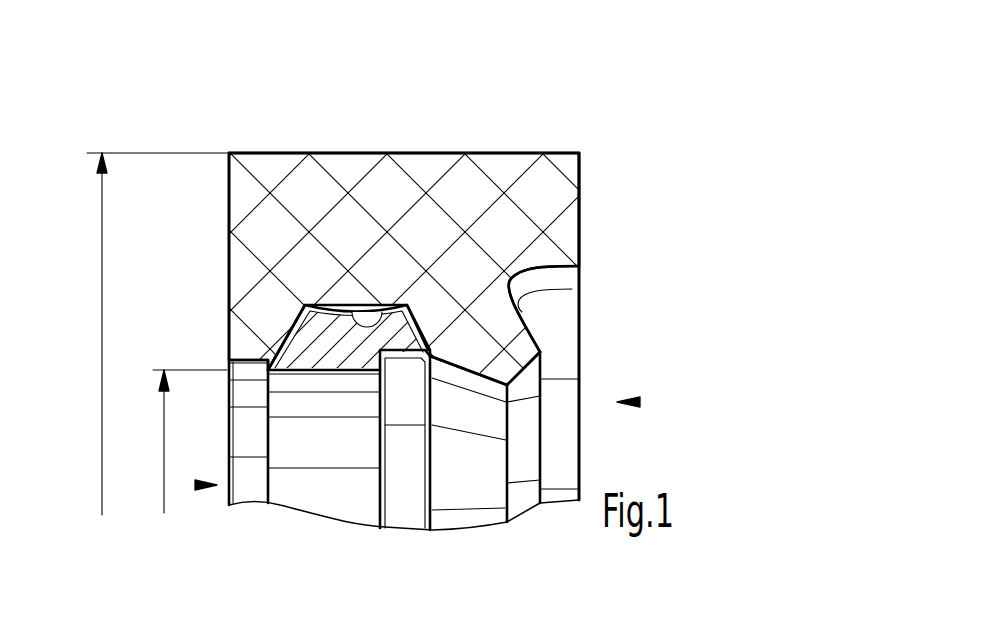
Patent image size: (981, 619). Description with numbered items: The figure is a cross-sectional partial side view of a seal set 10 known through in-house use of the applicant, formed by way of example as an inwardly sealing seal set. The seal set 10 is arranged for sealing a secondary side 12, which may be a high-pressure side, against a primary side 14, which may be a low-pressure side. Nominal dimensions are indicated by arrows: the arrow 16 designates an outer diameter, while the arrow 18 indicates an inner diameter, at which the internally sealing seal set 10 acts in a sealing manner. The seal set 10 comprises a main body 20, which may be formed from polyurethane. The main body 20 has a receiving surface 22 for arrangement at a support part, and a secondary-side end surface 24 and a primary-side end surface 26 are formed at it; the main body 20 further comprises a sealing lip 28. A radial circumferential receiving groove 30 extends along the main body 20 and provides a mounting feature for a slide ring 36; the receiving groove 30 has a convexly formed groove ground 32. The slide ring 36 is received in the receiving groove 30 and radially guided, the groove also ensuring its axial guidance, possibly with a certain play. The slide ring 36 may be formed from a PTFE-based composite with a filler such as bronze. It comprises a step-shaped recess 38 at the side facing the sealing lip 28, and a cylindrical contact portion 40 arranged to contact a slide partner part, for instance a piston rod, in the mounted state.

The seal set 10 is at (447, 145).
The secondary side 12 is at (638, 402).
The primary side 14 is at (197, 485).
The outer diameter 16 is at (106, 328).
The inner diameter 18 is at (168, 460).
The main body 20 is at (312, 213).
The receiving surface 22 is at (338, 137).
The secondary-side end surface 24 is at (590, 227).
The primary-side end surface 26 is at (214, 220).
The sealing lip 28 is at (520, 348).
The receiving groove 30 is at (283, 347).
The groove ground 32 is at (379, 316).
The slide ring 36 is at (348, 352).
The step-shaped recess 38 is at (400, 367).
The contact portion 40 is at (342, 383).